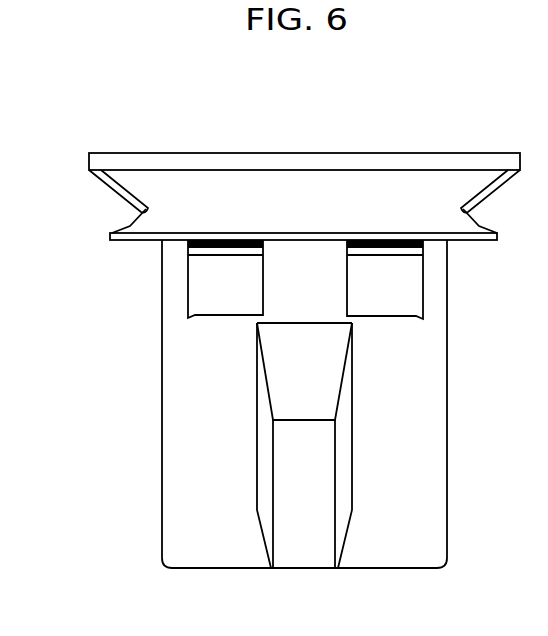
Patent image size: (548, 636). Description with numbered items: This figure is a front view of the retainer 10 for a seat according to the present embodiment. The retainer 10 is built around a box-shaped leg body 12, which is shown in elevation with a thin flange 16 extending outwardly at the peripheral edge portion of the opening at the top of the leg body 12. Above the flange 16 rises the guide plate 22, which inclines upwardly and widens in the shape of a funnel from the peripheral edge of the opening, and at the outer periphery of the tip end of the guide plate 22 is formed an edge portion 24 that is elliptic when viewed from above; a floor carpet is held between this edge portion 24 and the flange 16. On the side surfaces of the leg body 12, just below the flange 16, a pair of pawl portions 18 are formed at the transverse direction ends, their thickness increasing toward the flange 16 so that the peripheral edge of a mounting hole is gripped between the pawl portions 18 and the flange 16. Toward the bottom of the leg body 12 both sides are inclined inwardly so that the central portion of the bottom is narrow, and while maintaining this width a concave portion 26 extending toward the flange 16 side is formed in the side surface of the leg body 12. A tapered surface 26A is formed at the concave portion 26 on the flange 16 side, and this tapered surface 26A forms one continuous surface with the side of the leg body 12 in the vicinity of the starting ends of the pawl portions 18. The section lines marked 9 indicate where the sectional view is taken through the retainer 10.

The section line 9- 9 is at (305, 152).
The retainer for seat 10 is at (145, 368).
The leg body 12 is at (420, 408).
The flange 16 is at (128, 226).
The pawl portions 18 is at (213, 278).
The guide plate 22 is at (130, 180).
The edge portion 24 is at (428, 157).
The concave portion 26 is at (314, 486).
The tapered surface 26A is at (317, 370).